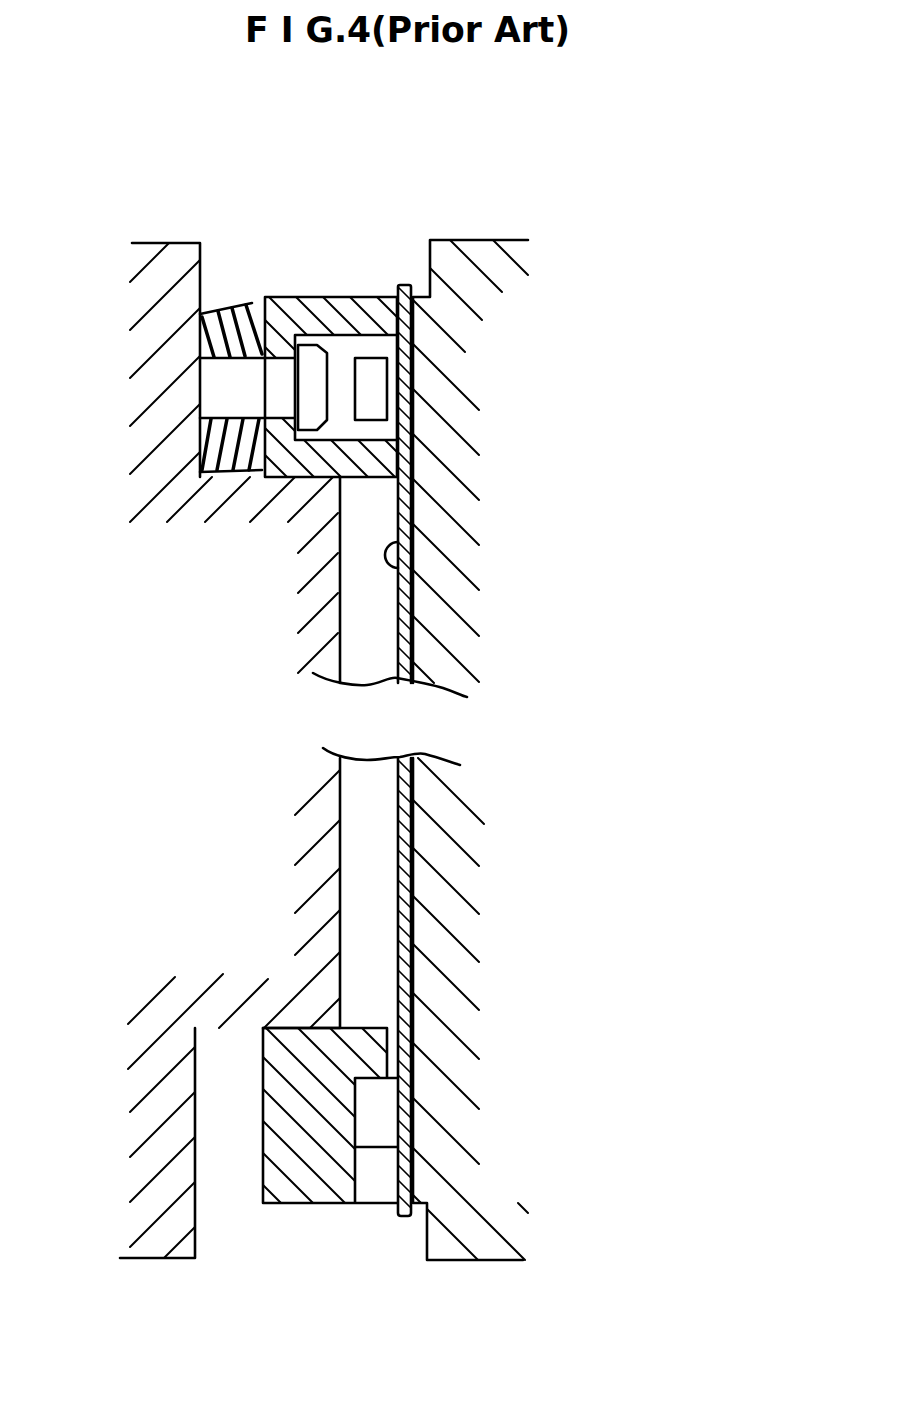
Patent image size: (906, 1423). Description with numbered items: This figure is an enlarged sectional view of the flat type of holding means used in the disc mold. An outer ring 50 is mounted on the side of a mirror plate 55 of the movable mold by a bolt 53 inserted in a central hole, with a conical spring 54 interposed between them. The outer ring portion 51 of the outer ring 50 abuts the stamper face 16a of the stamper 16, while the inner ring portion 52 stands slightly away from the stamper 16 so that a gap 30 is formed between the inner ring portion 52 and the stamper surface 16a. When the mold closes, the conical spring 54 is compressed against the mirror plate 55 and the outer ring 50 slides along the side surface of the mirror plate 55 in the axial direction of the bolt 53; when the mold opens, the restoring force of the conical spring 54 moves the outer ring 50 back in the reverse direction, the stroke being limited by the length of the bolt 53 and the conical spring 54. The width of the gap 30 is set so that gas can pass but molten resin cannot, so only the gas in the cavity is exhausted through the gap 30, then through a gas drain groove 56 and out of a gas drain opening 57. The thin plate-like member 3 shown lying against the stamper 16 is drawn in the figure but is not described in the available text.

The panel 3 is at (380, 902).
The stamper 16 is at (410, 645).
The stamper face 16a is at (410, 567).
The gap 30 is at (410, 487).
The outer ring 50 is at (327, 376).
The outer ring portion 51 is at (318, 297).
The inner ring portion 52 is at (300, 478).
The bolt 53 is at (230, 400).
The conical spring 54 is at (205, 306).
The mirror plate 55 is at (167, 373).
The gas drain groove 56 is at (367, 398).
The gas drain opening 57 is at (381, 1207).